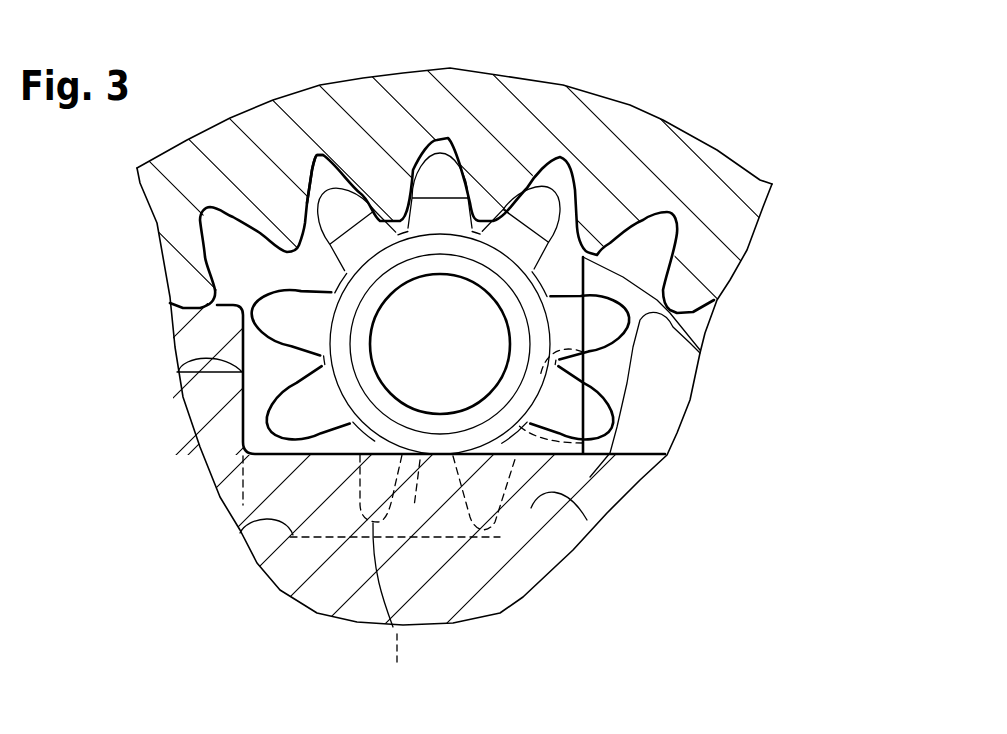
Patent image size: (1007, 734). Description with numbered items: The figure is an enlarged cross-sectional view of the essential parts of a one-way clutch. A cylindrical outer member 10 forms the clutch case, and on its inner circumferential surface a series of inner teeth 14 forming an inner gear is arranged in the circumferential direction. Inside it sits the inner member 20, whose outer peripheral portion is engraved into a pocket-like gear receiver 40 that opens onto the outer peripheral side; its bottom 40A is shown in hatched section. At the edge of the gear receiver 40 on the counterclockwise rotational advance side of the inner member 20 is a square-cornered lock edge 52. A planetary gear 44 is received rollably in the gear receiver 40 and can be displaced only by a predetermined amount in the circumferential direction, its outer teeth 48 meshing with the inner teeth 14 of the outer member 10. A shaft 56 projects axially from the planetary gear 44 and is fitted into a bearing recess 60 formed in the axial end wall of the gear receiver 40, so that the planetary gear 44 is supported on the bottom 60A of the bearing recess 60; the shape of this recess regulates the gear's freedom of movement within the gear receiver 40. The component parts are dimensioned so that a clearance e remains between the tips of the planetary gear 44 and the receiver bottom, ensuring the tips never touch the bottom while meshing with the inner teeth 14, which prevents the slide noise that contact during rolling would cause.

The outer member 10 is at (662, 121).
The inner teeth 14 is at (597, 243).
The inner member 20 is at (532, 580).
The gear receiver 40 is at (240, 536).
The bottom of gear receiver 40A is at (588, 521).
The planetary gear 44 is at (359, 418).
The outer teeth 48 is at (340, 212).
The lock edge 52 is at (345, 230).
The shaft 56 is at (529, 377).
The bearing recess 60 is at (387, 455).
The bottom of bearing recess 60A is at (453, 456).
The clearance e is at (397, 660).